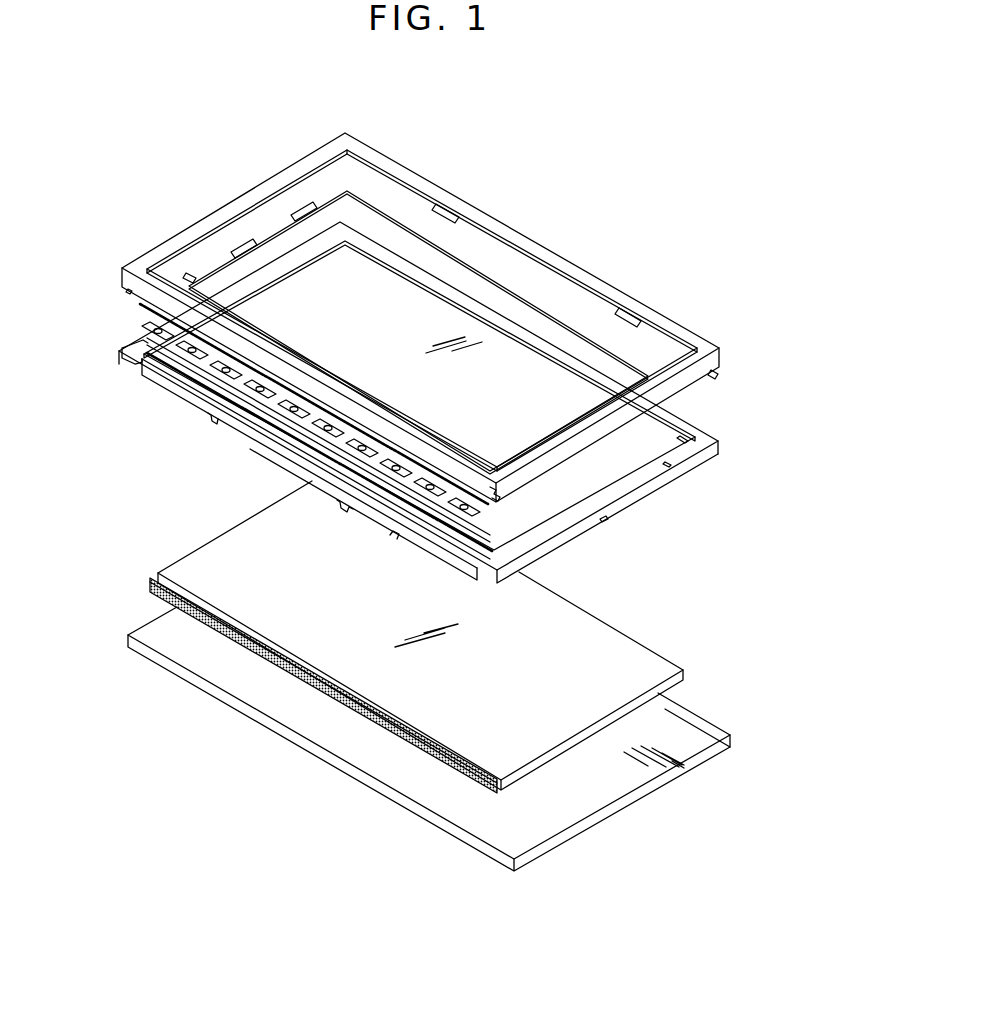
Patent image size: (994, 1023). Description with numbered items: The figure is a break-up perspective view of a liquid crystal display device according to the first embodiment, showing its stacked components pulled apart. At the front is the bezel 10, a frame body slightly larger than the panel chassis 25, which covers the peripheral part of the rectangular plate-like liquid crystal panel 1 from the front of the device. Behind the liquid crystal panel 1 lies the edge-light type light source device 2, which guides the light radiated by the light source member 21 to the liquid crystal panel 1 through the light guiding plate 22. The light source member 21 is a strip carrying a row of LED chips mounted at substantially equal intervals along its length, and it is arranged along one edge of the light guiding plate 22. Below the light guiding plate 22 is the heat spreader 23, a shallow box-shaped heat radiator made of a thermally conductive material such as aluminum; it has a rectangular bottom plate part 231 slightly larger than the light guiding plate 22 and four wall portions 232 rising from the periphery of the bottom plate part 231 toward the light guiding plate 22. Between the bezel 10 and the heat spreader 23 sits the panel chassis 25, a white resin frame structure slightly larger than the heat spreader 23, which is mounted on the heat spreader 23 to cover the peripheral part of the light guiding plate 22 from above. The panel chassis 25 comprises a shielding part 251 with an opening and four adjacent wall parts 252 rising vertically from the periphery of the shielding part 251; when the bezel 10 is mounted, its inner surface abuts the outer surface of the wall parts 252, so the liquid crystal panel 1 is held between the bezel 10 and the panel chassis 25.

The liquid crystal panel 1 is at (455, 283).
The bezel 10 is at (705, 352).
The light source device 2 is at (434, 676).
The light source member 21 is at (148, 580).
The light guiding plate 22 is at (605, 632).
The heat spreader 23 is at (434, 733).
The bottom plate part 231 is at (432, 790).
The wall portions 232 is at (138, 630).
The panel chassis 25 is at (443, 402).
The shielding part 251 is at (712, 443).
The wall parts 252 is at (165, 390).